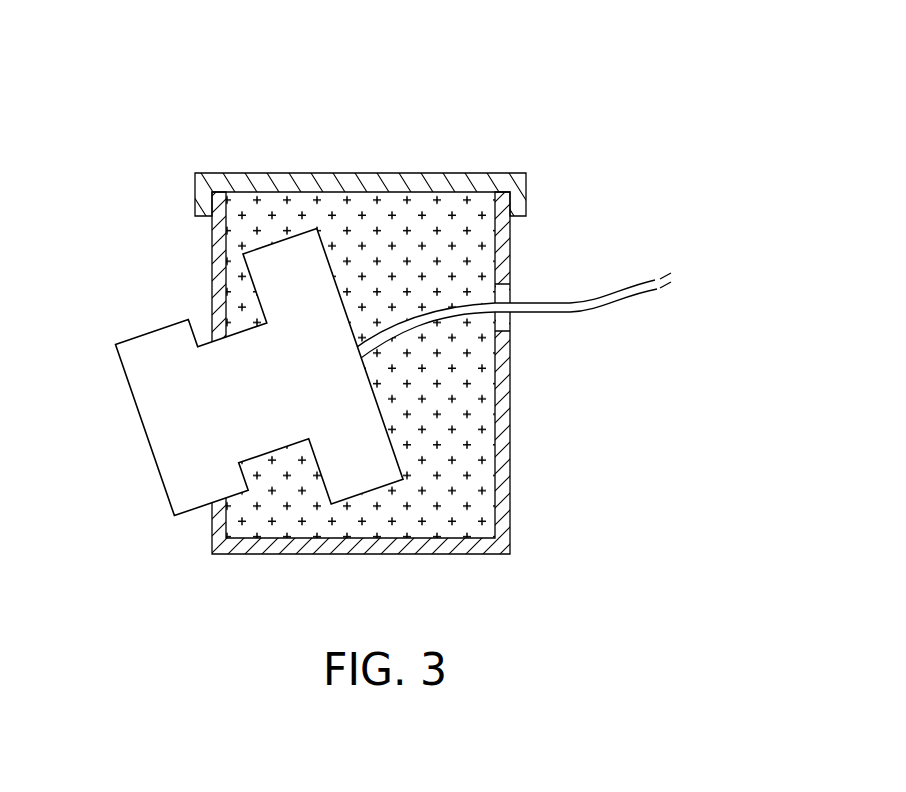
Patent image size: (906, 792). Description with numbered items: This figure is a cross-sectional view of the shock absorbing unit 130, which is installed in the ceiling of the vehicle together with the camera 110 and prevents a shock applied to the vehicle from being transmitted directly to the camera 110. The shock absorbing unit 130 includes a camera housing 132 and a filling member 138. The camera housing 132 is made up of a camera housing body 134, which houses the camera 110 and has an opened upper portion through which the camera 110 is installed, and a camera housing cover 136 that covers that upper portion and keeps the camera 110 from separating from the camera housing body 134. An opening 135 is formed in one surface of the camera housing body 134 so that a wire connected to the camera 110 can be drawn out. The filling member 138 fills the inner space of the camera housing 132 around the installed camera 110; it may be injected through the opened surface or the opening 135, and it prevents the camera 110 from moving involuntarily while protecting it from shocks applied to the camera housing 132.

The camera 110 is at (180, 472).
The shock absorbing unit 130 is at (511, 148).
The camera housing 132 is at (481, 339).
The camera housing body 134 is at (510, 358).
The opening 135 is at (503, 292).
The camera housing cover 136 is at (527, 176).
The filling member 138 is at (453, 450).